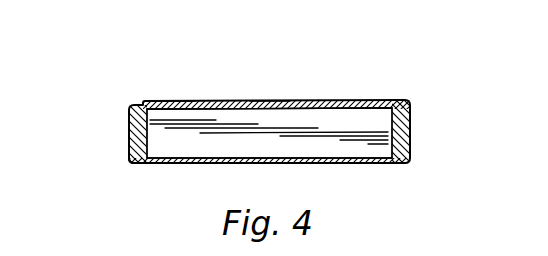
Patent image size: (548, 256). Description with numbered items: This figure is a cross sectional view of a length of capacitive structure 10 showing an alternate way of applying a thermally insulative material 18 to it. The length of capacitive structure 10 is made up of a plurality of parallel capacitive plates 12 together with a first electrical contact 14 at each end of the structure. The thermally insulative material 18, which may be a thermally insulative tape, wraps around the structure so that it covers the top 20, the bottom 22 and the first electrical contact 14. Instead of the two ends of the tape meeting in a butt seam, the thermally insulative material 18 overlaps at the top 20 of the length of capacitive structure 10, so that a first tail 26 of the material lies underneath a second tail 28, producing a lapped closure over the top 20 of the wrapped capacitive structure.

The length of capacitive structure 10 is at (463, 146).
The parallel capacitive plates 12 is at (204, 144).
The first electrical contact 14 is at (401, 123).
The thermally insulative material 18 is at (141, 165).
The top 20 is at (335, 100).
The bottom 22 is at (368, 163).
The first tail 26 is at (268, 102).
The second tail 28 is at (173, 102).